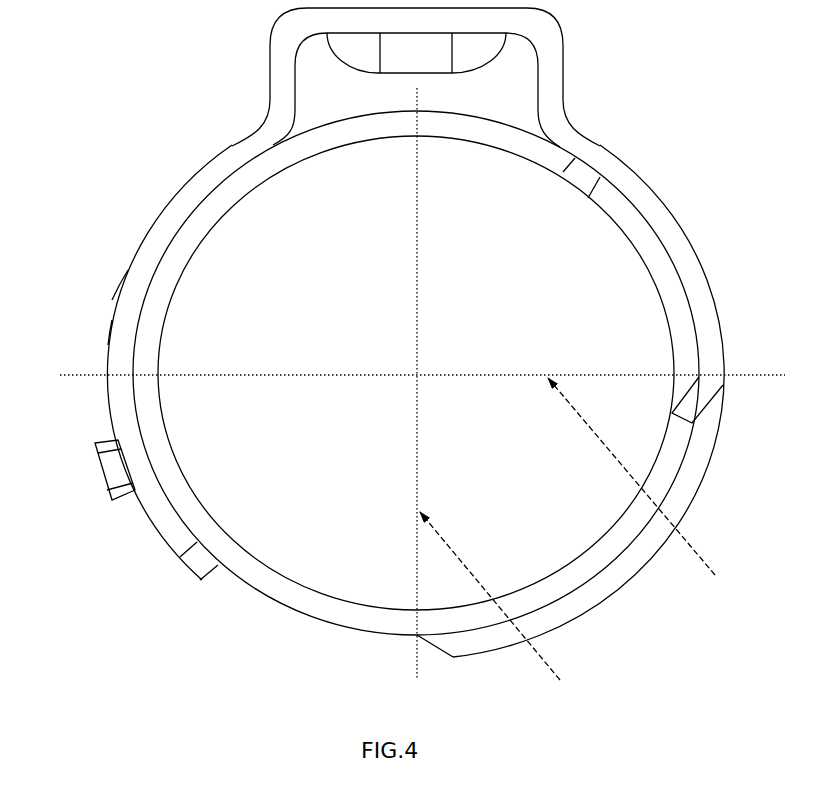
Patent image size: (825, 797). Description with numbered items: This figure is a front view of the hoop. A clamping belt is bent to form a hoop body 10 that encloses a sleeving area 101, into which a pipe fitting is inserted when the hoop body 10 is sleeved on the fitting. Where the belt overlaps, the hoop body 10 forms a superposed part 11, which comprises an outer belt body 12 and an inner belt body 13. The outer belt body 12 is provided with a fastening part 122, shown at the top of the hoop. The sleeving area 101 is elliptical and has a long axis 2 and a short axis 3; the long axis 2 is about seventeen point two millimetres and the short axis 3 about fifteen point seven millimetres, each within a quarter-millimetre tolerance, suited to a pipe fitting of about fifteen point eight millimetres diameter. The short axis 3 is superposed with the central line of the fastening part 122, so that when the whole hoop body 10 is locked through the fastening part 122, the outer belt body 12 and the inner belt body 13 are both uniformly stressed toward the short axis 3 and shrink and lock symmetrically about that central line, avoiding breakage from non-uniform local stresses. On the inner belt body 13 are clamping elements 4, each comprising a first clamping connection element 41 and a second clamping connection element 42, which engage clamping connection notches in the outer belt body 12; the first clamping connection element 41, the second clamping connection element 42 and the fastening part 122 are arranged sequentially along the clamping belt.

The hoop body 10 is at (636, 115).
The sleeving area 101 is at (634, 343).
The fastening part 122 is at (314, 86).
The superposed part 11 is at (45, 229).
The outer belt body 12 is at (162, 238).
The inner belt body 13 is at (209, 214).
The clamping element 4 is at (43, 320).
The first clamping connection element 41 is at (89, 291).
The second clamping connection element 42 is at (108, 344).
The long axis 2 is at (642, 483).
The short axis 3 is at (498, 602).